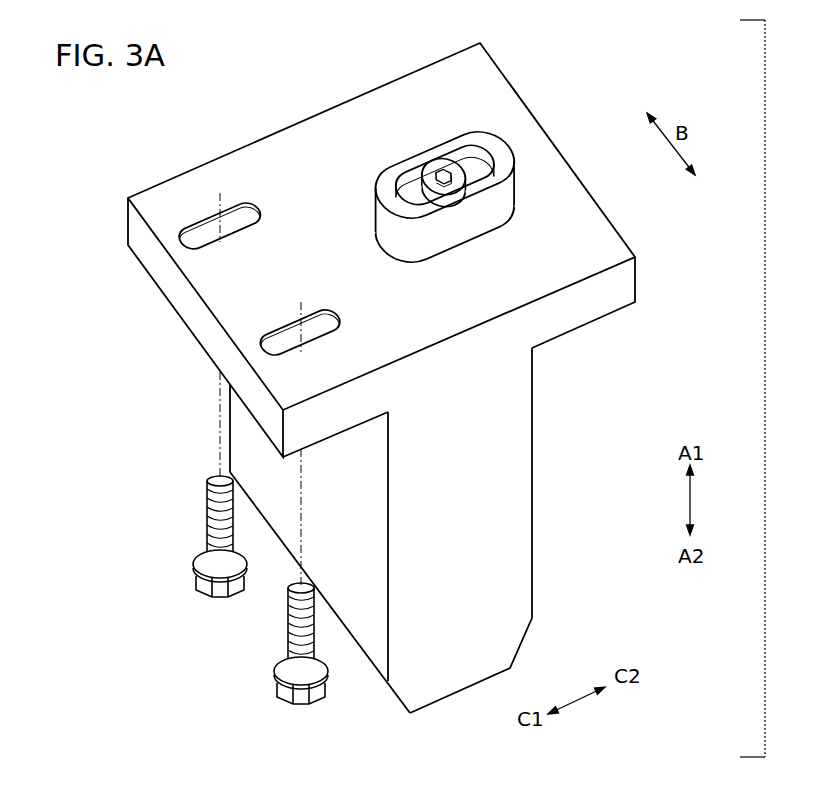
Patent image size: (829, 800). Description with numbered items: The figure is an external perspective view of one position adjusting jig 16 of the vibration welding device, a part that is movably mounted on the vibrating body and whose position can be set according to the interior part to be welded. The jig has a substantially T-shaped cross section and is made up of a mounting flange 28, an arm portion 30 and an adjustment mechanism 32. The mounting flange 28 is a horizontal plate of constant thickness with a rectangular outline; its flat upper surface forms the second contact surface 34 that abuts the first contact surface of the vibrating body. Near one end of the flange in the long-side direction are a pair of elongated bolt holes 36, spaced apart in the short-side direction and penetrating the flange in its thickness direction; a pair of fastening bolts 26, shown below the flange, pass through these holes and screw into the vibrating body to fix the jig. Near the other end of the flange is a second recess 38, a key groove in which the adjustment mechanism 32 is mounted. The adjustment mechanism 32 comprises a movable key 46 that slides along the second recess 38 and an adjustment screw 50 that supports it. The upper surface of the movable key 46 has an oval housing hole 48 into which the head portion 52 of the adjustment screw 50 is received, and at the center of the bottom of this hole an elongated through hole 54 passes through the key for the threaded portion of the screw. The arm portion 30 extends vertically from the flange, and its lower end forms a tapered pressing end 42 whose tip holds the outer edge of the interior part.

The position adjusting jig 16 is at (212, 140).
The fastening bolts 26 is at (215, 598).
The mounting flange 28 is at (486, 76).
The arm portion 30 is at (505, 495).
The adjustment mechanism 32 is at (413, 262).
The second contact surface 34 is at (381, 226).
The bolt holes 36 is at (245, 221).
The second recess 38 is at (526, 190).
The pressing end 42 is at (424, 694).
The movable key 46 is at (383, 182).
The housing hole 48 is at (403, 185).
The adjustment screw 50 is at (430, 170).
The head portion 52 is at (429, 142).
The through hole 54 is at (472, 175).